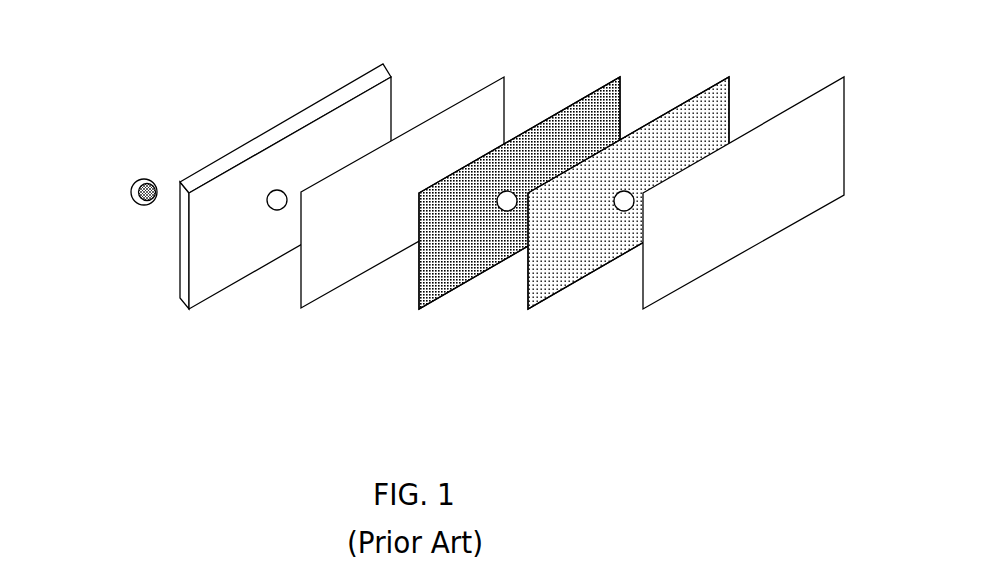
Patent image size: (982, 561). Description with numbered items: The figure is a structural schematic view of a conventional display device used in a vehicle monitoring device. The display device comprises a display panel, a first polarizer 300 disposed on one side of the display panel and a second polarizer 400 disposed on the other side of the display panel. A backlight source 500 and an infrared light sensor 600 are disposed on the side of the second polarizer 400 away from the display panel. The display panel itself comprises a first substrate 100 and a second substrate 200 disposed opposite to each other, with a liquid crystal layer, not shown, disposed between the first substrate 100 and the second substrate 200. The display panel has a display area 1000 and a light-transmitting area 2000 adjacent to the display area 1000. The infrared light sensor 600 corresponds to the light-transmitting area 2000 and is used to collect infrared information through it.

The display area 1000 is at (374, 130).
The light-transmitting area 2000 is at (285, 185).
The infrared light sensor 600 is at (125, 201).
The backlight source 500 is at (285, 221).
The second polarizer 400 is at (340, 303).
The first substrate 100 is at (464, 301).
The second substrate 200 is at (575, 298).
The first polarizer 300 is at (770, 252).